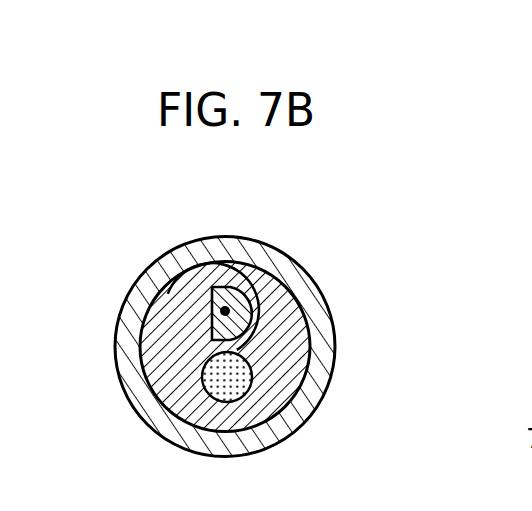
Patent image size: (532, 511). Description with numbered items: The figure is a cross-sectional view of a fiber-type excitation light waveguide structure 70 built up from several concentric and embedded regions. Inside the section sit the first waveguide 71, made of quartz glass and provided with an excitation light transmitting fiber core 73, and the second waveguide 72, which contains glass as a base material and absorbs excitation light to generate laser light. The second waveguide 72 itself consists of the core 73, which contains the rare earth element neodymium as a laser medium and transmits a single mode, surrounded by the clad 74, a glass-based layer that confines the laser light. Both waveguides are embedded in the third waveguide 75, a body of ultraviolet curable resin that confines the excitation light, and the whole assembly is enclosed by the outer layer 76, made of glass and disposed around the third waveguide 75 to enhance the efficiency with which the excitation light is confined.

The optical cable 70 is at (122, 412).
The first waveguide 71 is at (217, 382).
The second waveguide 72 is at (205, 291).
The core 73 is at (224, 308).
The clad 74 is at (236, 296).
The third waveguide 75 is at (307, 320).
The outer layer 76 is at (308, 402).